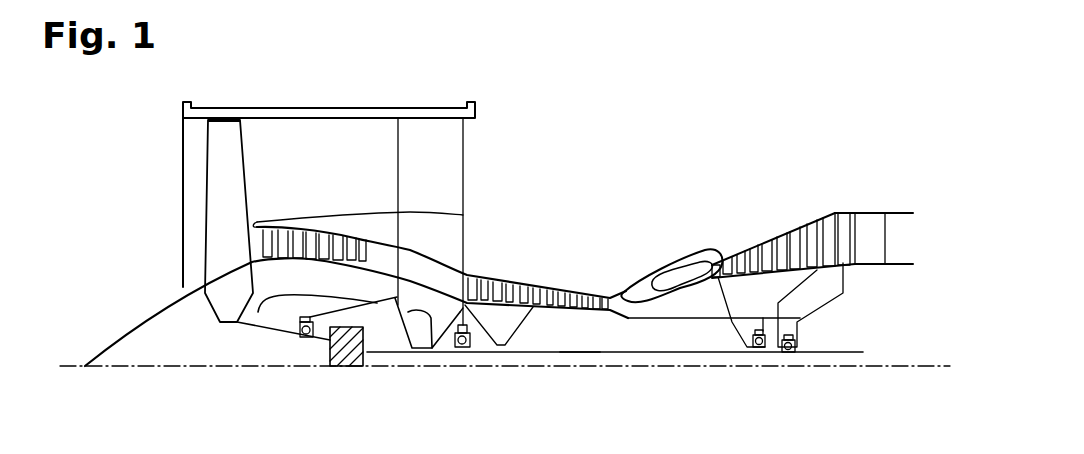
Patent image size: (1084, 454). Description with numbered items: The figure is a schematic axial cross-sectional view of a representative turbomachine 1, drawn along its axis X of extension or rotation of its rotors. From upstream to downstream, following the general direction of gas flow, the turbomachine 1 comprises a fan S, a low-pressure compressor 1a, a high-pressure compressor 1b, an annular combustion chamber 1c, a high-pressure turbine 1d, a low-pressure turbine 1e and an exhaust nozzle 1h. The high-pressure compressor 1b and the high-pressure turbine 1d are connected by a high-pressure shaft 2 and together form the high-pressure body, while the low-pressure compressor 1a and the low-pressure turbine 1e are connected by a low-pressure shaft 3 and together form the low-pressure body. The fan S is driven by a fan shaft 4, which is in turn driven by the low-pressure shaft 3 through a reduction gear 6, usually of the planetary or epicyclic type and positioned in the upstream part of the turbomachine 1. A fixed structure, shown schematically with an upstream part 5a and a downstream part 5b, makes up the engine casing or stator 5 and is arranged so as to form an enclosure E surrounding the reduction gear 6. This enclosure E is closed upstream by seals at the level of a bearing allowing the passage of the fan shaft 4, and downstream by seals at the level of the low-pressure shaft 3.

The turbomachine 1 is at (590, 190).
The low-pressure compressor 1a is at (287, 240).
The high-pressure compressor 1b is at (498, 283).
The annular combustion chamber 1c is at (665, 283).
The high-pressure turbine 1d is at (717, 263).
The low-pressure turbine 1e is at (842, 233).
The exhaust nozzle 1h is at (897, 235).
The high-pressure shaft 2 is at (660, 320).
The low-pressure shaft 3 is at (565, 353).
The fan shaft 4 is at (287, 340).
The engine casing or stator 5 is at (378, 283).
The upstream part 5a is at (259, 312).
The downstream part 5b is at (419, 334).
The reduction gear 6 is at (340, 343).
The enclosure E is at (377, 317).
The fan S is at (222, 172).
The engine axis X is at (67, 370).